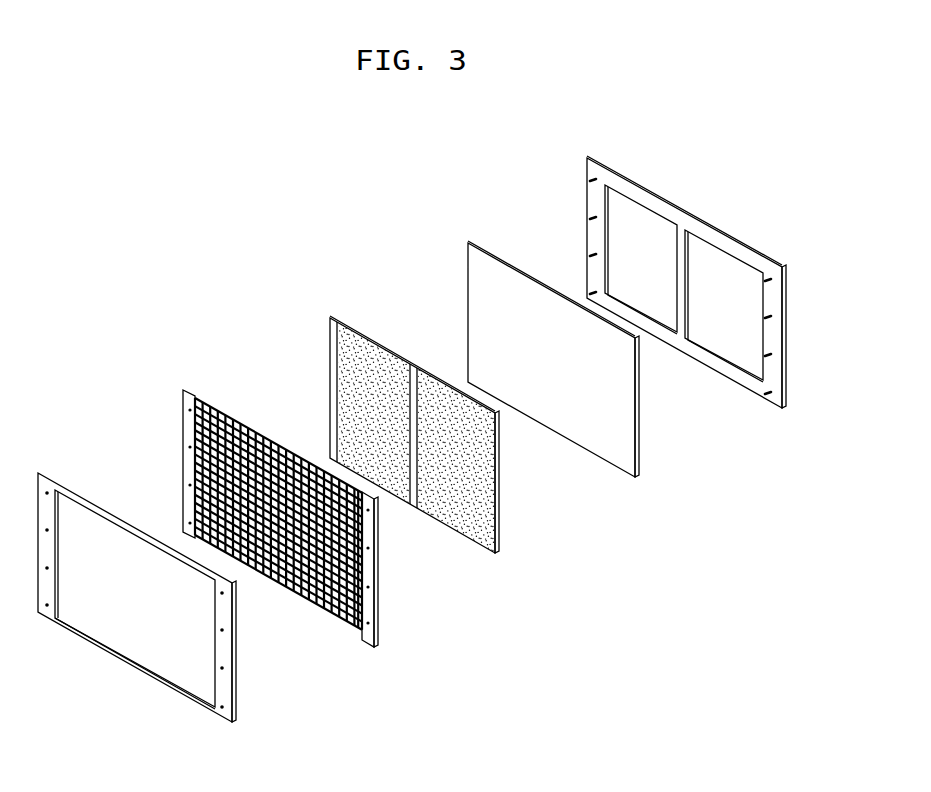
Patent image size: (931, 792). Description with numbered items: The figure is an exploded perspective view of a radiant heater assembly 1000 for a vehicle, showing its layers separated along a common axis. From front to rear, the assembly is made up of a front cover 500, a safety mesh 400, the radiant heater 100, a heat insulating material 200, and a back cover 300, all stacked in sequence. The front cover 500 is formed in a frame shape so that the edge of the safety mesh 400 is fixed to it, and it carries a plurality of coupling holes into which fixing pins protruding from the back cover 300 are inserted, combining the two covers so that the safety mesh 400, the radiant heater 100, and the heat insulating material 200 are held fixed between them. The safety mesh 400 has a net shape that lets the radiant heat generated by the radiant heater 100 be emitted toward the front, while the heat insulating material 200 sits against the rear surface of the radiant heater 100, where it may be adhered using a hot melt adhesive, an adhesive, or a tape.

The radiant heater assembly 1000 is at (275, 224).
The radiant heater 100 is at (375, 343).
The heat insulating material 200 is at (495, 253).
The back cover 300 is at (642, 185).
The safety mesh 400 is at (247, 418).
The front cover 500 is at (92, 497).